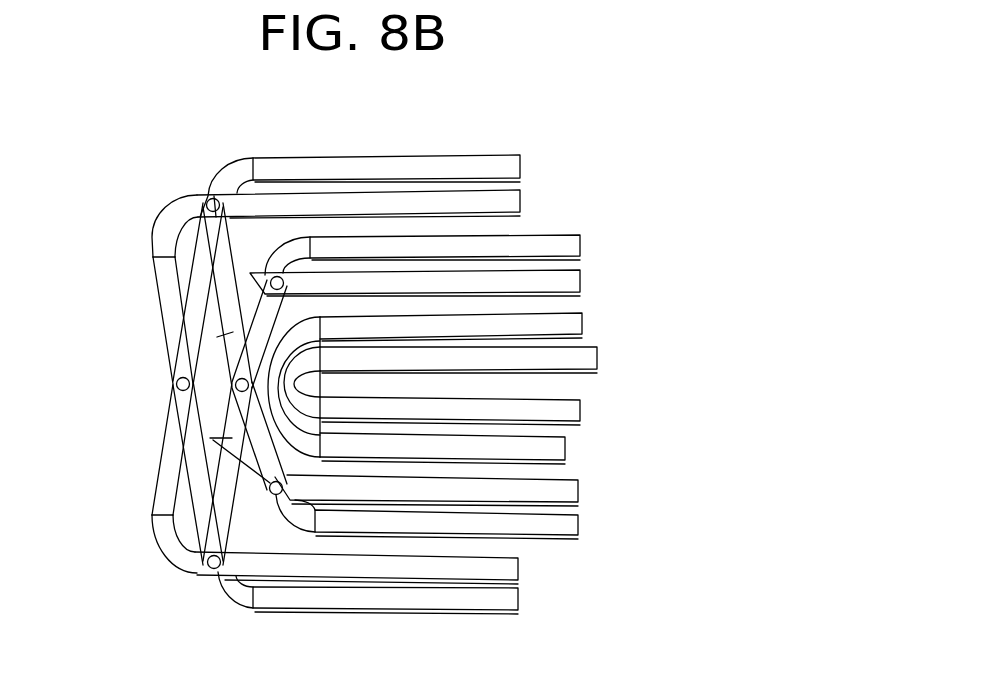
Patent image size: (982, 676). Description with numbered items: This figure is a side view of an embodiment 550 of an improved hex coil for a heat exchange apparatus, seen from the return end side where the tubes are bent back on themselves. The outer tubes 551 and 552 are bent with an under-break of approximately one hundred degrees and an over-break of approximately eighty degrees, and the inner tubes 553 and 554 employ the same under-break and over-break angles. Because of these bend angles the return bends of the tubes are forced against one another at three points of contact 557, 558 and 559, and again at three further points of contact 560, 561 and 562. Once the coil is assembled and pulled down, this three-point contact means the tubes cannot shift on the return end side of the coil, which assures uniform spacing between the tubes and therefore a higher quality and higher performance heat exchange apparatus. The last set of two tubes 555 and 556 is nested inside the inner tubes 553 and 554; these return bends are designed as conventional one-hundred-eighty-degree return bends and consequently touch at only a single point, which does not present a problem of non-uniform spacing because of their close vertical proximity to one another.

The embodiment of hex coil 550 is at (518, 127).
The outer tube 551 is at (520, 162).
The outer tube 552 is at (520, 198).
The inner tube 553 is at (585, 244).
The inner tube 554 is at (585, 283).
The tube 555 is at (585, 320).
The tube 556 is at (600, 362).
The point of contact 557 is at (211, 199).
The point of contact 558 is at (176, 383).
The point of contact 559 is at (208, 570).
The point of contact 560 is at (269, 281).
The point of contact 561 is at (235, 387).
The point of contact 562 is at (269, 491).